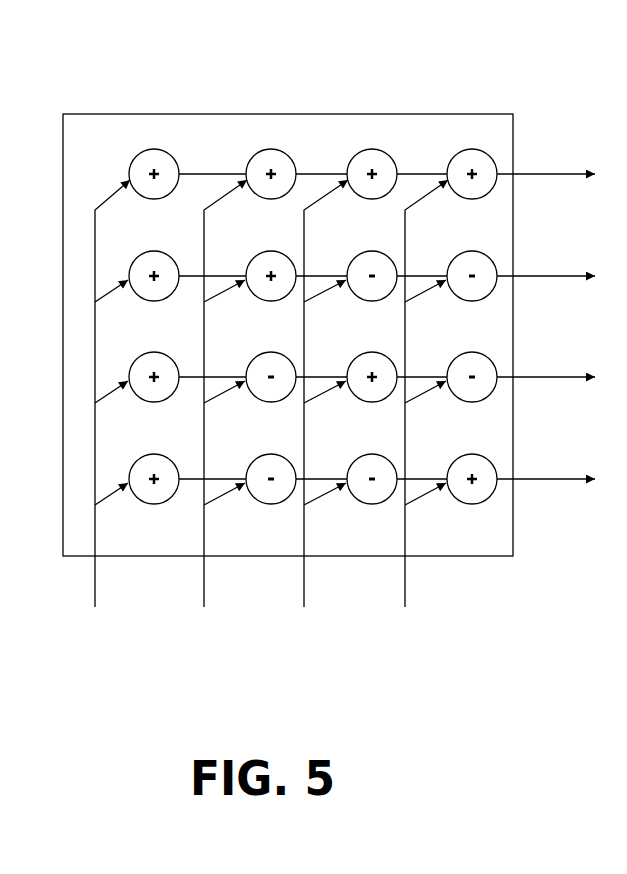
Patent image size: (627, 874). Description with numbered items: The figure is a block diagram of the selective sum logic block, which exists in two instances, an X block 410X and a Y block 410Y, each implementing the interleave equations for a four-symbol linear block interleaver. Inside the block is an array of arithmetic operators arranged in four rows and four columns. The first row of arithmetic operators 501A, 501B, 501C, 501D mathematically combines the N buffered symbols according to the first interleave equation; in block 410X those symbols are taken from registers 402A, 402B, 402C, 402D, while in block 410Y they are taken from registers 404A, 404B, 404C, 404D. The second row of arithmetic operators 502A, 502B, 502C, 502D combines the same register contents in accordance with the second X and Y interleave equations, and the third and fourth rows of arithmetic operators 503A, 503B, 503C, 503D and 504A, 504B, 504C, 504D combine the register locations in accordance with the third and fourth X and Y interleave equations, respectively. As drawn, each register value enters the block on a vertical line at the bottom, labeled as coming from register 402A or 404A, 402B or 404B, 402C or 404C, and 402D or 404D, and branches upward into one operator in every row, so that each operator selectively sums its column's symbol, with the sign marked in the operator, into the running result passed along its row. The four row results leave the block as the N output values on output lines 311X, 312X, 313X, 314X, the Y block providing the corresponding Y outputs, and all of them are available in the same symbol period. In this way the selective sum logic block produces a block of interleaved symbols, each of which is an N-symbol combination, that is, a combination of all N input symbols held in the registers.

The selective sum logic block (X) 410X is at (288, 288).
The selective sum logic block (Y) 410Y is at (270, 58).
The arithmetic operator 501A is at (156, 150).
The arithmetic operator 501B is at (273, 150).
The arithmetic operator 501C is at (374, 150).
The arithmetic operator 501D is at (474, 150).
The arithmetic operator 502A is at (155, 252).
The arithmetic operator 502B is at (272, 252).
The arithmetic operator 502C is at (373, 252).
The arithmetic operator 502D is at (473, 252).
The arithmetic operator 503A is at (155, 353).
The arithmetic operator 503B is at (272, 353).
The arithmetic operator 503C is at (373, 353).
The arithmetic operator 503D is at (473, 353).
The arithmetic operator 504A is at (155, 455).
The arithmetic operator 504B is at (272, 455).
The arithmetic operator 504C is at (373, 455).
The arithmetic operator 504D is at (473, 455).
The output line 311X is at (546, 159).
The output line 312X is at (546, 261).
The output line 313X is at (546, 362).
The output line 314X is at (546, 464).
The register 402A is at (135, 444).
The register 402B is at (244, 444).
The register 402C is at (344, 444).
The register 402D is at (445, 444).
The register 404A is at (95, 593).
The register 404B is at (204, 593).
The register 404C is at (304, 593).
The register 404D is at (405, 593).